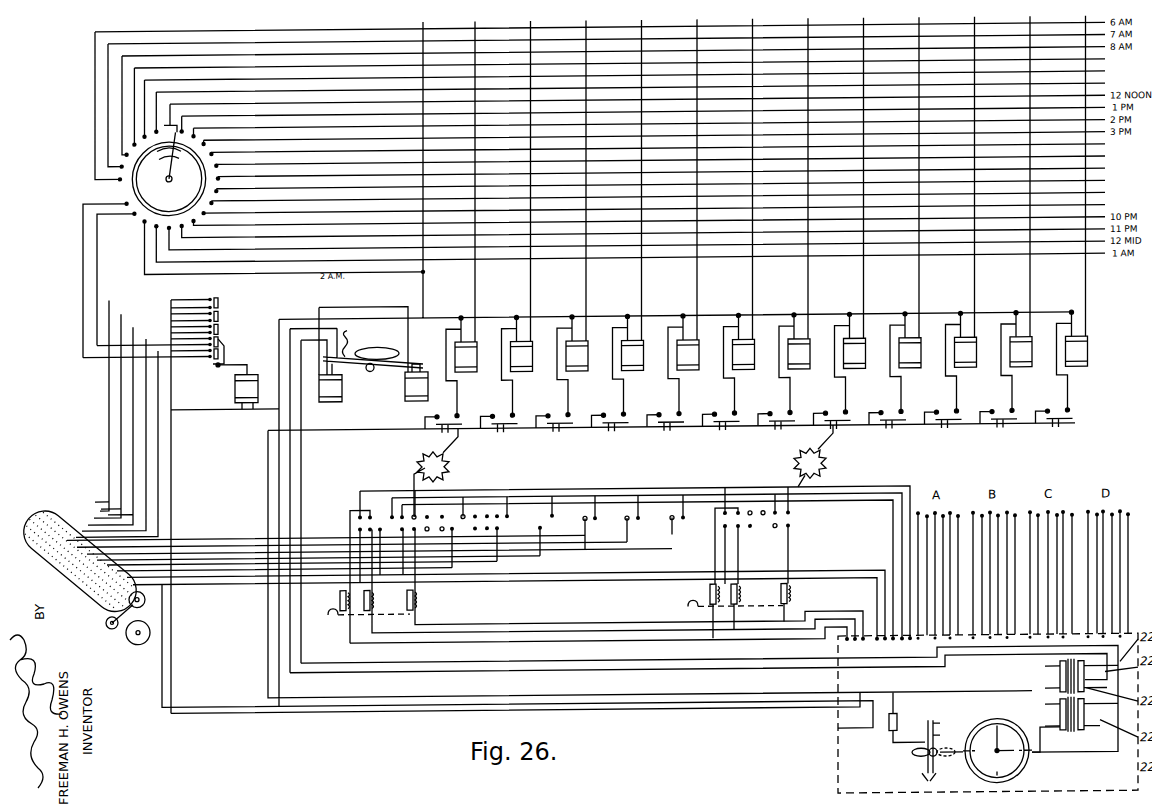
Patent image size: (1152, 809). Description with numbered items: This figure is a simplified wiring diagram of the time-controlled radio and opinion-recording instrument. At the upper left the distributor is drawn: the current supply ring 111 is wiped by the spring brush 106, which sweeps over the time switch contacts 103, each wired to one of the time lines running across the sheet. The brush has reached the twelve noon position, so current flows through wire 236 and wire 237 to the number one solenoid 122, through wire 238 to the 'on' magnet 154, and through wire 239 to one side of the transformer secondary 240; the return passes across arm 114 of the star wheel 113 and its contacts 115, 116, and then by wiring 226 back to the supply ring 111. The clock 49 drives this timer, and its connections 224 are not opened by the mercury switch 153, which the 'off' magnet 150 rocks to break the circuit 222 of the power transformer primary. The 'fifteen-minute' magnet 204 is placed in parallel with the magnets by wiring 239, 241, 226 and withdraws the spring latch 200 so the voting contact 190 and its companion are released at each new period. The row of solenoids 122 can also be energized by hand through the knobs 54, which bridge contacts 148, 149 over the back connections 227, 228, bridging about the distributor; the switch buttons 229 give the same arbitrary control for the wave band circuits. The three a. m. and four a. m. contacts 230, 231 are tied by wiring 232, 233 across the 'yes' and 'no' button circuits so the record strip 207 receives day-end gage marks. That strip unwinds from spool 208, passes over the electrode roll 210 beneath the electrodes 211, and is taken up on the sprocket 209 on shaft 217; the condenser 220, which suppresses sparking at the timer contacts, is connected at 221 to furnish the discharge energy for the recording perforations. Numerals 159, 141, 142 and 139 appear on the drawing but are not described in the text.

The wire 236 is at (172, 128).
The time switch contact 103 is at (170, 134).
The spring brush 106 is at (182, 118).
The current supply ring 111 is at (140, 186).
The 4 a. m. contact 231 is at (125, 204).
The 3 a. m. contact 230 is at (134, 216).
The wiring 226 is at (126, 272).
The wiring 232 is at (133, 300).
The wiring 233 is at (83, 320).
The selector contacts 159 is at (214, 300).
The wire 239 is at (319, 318).
The wire 238 is at (437, 318).
The wire 237 is at (478, 300).
The solenoid 122 is at (476, 345).
The mercury switch 153 is at (375, 352).
The 'on' magnet 154 is at (328, 391).
The 'off' magnet 150 is at (408, 390).
The contact 190 is at (216, 370).
The spring pressed latch 200 is at (232, 370).
The '15-minute' magnet 204 is at (235, 399).
The wiring 241 is at (262, 413).
The contact 148 is at (492, 418).
The contact 149 is at (520, 418).
The back connection 228 is at (568, 388).
The knob 54 is at (440, 434).
The terminal 141 is at (418, 467).
The terminal 142 is at (420, 476).
The lamp 139 is at (623, 471).
The switch button 229 is at (1072, 434).
The connection 227 is at (268, 480).
The electrode 211 is at (96, 501).
The record strip 207 is at (42, 526).
The electrode roll 210 is at (146, 601).
The take-up sprocket shaft 217 is at (146, 608).
The take-up spool 209 is at (112, 631).
The supply spool 208 is at (136, 647).
The condenser connection 221 is at (160, 689).
The circuit 222 is at (580, 668).
The condenser 220 is at (836, 713).
The contact 115 is at (934, 734).
The contact 116 is at (934, 745).
The transformer secondary 240 is at (1047, 741).
The arm 114 is at (912, 761).
The star wheel 113 is at (927, 770).
The clock 49 is at (1023, 766).
The connection 224 is at (1067, 752).